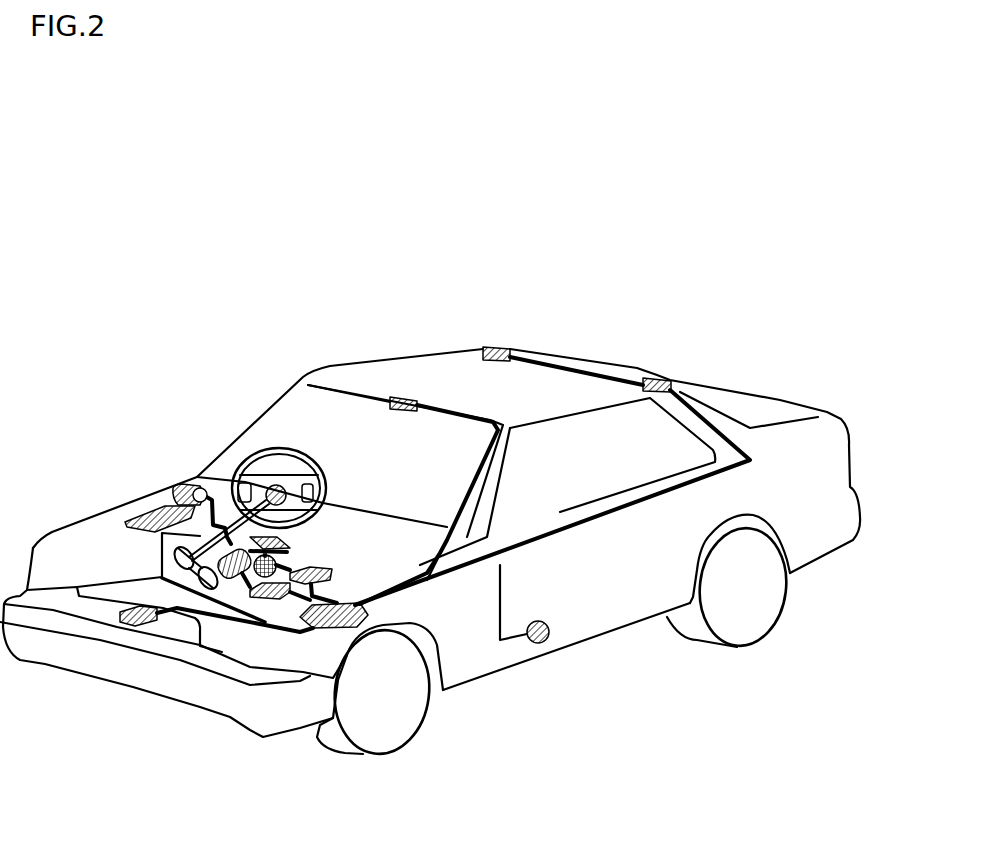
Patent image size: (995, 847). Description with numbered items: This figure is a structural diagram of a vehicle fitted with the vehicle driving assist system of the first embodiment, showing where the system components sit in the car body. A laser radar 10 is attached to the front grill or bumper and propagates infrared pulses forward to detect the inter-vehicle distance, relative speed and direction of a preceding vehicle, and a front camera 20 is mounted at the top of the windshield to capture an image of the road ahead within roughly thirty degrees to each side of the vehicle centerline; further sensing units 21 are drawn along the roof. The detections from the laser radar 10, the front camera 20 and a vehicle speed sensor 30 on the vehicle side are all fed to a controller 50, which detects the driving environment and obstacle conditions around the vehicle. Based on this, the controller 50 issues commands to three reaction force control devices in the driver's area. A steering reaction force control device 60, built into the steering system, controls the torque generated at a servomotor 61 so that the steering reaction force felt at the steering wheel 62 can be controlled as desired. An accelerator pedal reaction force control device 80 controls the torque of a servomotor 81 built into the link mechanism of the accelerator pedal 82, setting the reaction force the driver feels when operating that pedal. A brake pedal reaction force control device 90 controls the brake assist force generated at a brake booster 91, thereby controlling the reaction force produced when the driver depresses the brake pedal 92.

The laser radar 10 is at (135, 626).
The front camera 20 is at (400, 397).
The side camera 21 is at (497, 347).
The vehicle speed sensor 30 is at (537, 644).
The controller 50 is at (350, 628).
The steering reaction force control device 60 is at (260, 599).
The servomotor 61 is at (233, 580).
The steering wheel 62 is at (268, 448).
The accelerator pedal reaction force control device 80 is at (150, 512).
The servomotor 81 is at (184, 487).
The accelerator pedal 82 is at (162, 555).
The brake pedal reaction force control device 90 is at (330, 574).
The brake booster 91 is at (280, 562).
The brake pedal 92 is at (287, 538).